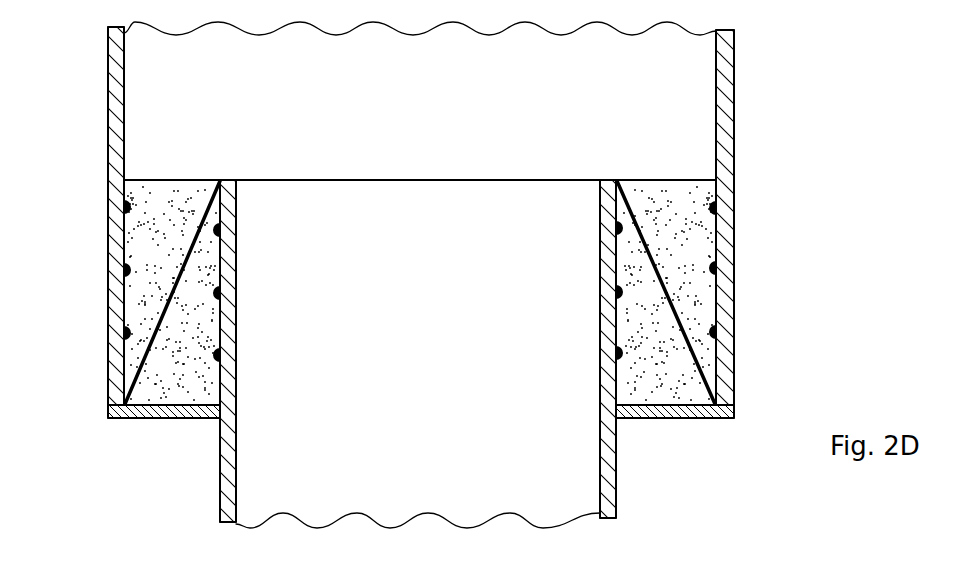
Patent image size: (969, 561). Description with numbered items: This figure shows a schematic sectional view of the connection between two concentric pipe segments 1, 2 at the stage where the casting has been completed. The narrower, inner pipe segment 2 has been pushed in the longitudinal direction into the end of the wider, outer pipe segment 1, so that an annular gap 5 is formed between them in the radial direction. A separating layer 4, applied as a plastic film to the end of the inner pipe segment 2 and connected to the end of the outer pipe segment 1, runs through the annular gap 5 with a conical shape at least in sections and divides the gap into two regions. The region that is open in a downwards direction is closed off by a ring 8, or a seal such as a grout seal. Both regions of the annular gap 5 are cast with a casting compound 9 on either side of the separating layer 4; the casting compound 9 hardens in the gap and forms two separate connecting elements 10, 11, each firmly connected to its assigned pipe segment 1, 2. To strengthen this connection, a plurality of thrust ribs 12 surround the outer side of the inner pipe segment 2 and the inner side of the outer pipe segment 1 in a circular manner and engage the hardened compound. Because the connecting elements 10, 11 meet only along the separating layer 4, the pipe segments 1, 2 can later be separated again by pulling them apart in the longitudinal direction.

The pipe segment 1 is at (734, 138).
The pipe segment 2 is at (610, 481).
The separating layer 4 is at (668, 305).
The annular gap 5 is at (675, 163).
The ring 8 is at (142, 420).
The casting compound 9 is at (660, 212).
The connecting element 10 is at (177, 193).
The connecting element 11 is at (181, 375).
The thrust ribs 12 is at (222, 352).